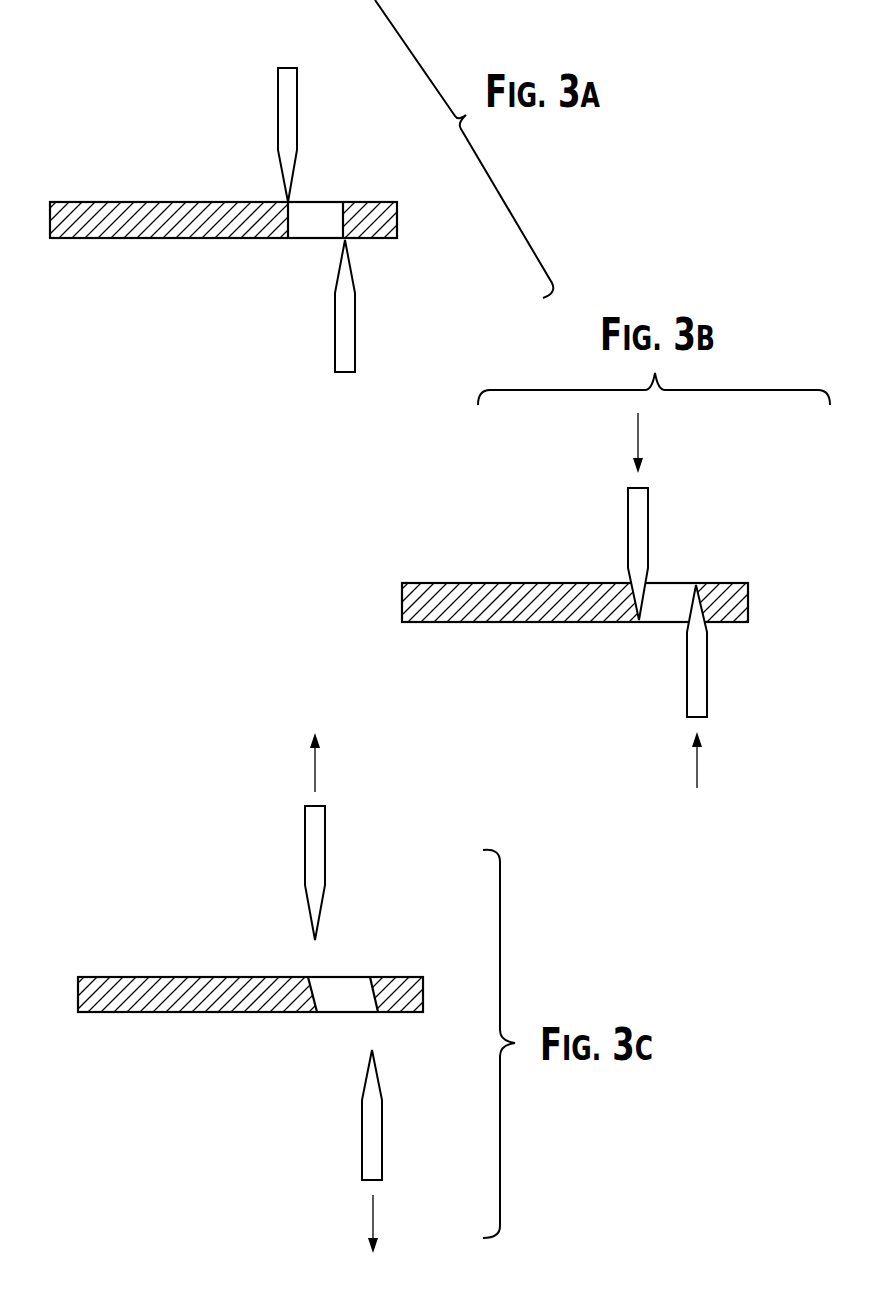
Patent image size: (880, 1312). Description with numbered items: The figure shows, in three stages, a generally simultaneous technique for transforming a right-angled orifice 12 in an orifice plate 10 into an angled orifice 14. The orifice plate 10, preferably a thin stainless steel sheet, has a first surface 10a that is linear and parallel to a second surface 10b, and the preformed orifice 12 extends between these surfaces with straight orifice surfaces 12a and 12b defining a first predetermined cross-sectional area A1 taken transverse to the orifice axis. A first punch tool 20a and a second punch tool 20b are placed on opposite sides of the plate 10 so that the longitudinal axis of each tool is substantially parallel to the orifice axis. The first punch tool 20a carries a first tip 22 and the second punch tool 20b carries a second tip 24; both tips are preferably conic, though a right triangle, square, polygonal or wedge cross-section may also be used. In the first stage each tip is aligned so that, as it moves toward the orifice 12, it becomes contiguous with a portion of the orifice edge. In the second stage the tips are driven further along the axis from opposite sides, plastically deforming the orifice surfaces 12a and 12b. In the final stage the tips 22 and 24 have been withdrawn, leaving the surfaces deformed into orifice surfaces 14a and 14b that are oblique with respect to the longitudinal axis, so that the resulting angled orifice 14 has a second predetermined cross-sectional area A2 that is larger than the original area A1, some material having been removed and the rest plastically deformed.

In FIG. 3A, the orifice plate 10 is at (160, 227).
In FIG. 3B, the orifice plate 10 is at (510, 610).
In FIG. 3C, the orifice plate 10 is at (188, 1002).
In FIG. 3A, the first surface 10a is at (135, 202).
In FIG. 3A, the second surface 10b is at (102, 242).
In FIG. 3A, the right-angled orifice 12 is at (296, 245).
In FIG. 3A, the orifice surface 12a is at (292, 212).
In FIG. 3A, the orifice surface 12b is at (333, 240).
In FIG. 3C, the angled orifice 14 is at (365, 983).
In FIG. 3C, the angled orifice surface 14a is at (327, 987).
In FIG. 3C, the angled orifice surface 14b is at (372, 1005).
In FIG. 3A, the first punch tool 20a is at (278, 108).
In FIG. 3B, the first punch tool 20a is at (628, 530).
In FIG. 3A, the second punch tool 20b is at (355, 333).
In FIG. 3B, the second punch tool 20b is at (707, 680).
In FIG. 3C, the first tip 22 is at (305, 843).
In FIG. 3C, the second tip 24 is at (382, 1140).
In FIG. 3A, the first predetermined cross-sectional area A1 is at (318, 236).
In FIG. 3C, the second predetermined cross-sectional area A2 is at (340, 1018).